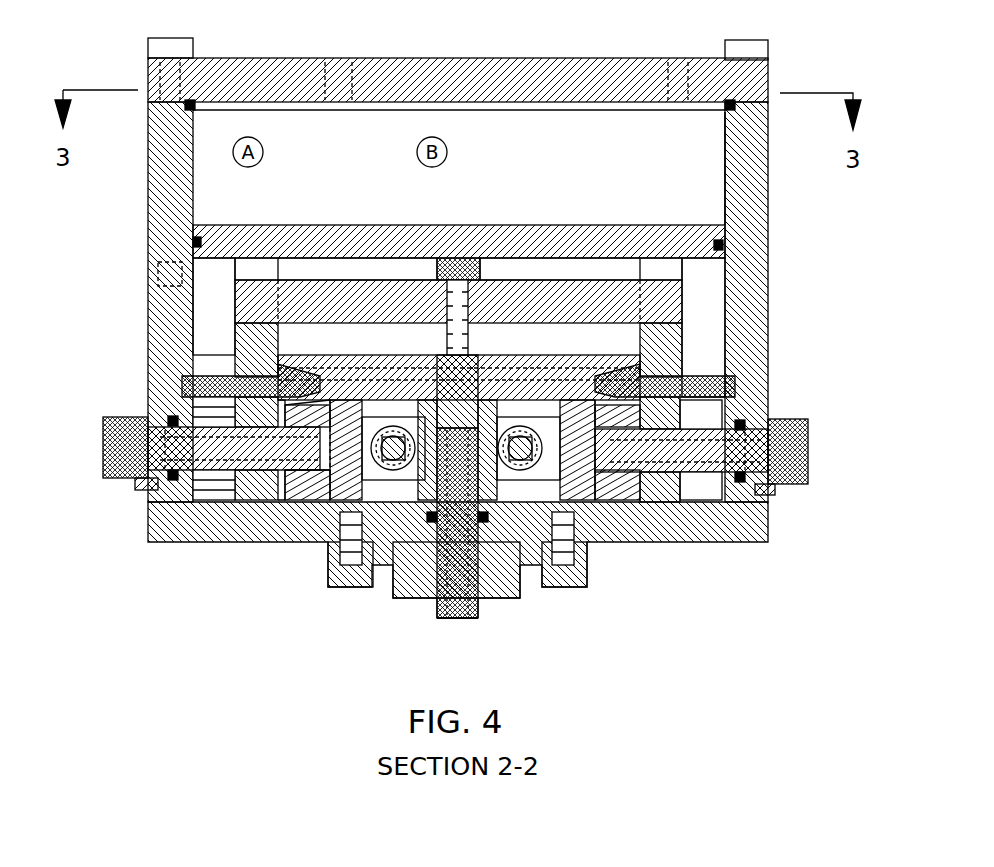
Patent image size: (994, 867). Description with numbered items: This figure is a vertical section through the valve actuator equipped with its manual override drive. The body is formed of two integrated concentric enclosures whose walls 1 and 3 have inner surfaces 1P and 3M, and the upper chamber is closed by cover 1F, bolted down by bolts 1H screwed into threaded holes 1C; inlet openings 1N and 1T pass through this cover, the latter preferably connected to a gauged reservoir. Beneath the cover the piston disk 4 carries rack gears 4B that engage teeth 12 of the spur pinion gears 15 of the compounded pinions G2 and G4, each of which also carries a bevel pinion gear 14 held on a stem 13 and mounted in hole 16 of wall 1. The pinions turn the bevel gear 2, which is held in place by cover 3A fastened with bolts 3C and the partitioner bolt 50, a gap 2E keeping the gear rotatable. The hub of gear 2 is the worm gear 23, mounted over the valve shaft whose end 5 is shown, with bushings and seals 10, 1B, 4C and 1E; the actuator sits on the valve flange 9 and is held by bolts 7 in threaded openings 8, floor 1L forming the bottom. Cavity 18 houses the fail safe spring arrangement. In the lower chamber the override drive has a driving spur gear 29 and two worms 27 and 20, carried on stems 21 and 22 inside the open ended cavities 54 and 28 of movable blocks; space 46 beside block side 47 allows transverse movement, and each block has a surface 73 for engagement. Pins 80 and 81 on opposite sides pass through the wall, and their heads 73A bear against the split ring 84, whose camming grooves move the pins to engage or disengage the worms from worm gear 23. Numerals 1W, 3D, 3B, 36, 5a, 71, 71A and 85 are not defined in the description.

The outer enclosure wall 1 is at (770, 328).
The bolts 1H is at (185, 40).
The cover 1F is at (625, 60).
The inlet opening 1N is at (668, 85).
The inlet opening 1T is at (347, 78).
The threaded holes 1C is at (160, 115).
The bushing/seal 1B is at (725, 112).
The inner surface of enclosure 1P is at (725, 208).
The housing wall bore 1W is at (172, 278).
The floor 1L is at (737, 510).
The bushing/seal 1E is at (498, 512).
The bolts 7 is at (338, 580).
The flange 9 is at (590, 560).
The threaded openings 8 is at (350, 520).
The stem 22 is at (560, 520).
The piston disk 4 is at (265, 225).
The bushing/seal 4C is at (220, 225).
The inner surface of enclosure 3M is at (175, 258).
The cavity 3D is at (688, 330).
The cover 3A is at (385, 268).
The frame upper portion 3B is at (593, 345).
The partitioner bolt 50 is at (447, 262).
The bevel gear 2 is at (415, 300).
The gap 2E is at (500, 280).
The bolts 3C is at (715, 272).
The inner enclosure wall 3 is at (683, 345).
The stem 13 is at (250, 342).
The rack gears 4B is at (215, 495).
The bevel pinion gear 14 is at (318, 375).
The compounded pinion G4 is at (262, 370).
The compounded pinion G2 is at (700, 378).
The pin 81 is at (720, 415).
The shaft 36 is at (450, 395).
The end of shaft A 5 is at (455, 598).
The shaft end 5a is at (458, 590).
The bushing/seal 10 is at (440, 595).
The worm gear 23 is at (440, 410).
The driving spur gear 29 is at (478, 400).
The worm 27 is at (385, 430).
The stem 21 is at (390, 440).
The cavity 28 is at (535, 400).
The worm 20 is at (550, 410).
The side of block 47 is at (300, 510).
The space 46 is at (290, 490).
The cavity 54 is at (300, 515).
The side shaft 71 is at (180, 495).
The spur pinion gear 15 is at (230, 400).
The hole 16 is at (200, 380).
The teeth 12 is at (195, 350).
The pin 80 is at (213, 493).
The side shaft 71A is at (745, 487).
The surface of block 73 is at (625, 520).
The cavity 18 is at (705, 490).
The pin heads 73A is at (148, 430).
The split ring 84 is at (105, 450).
The retainer 85 is at (150, 488).